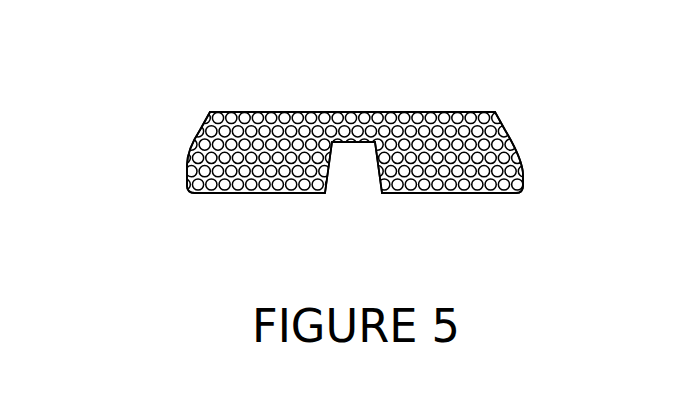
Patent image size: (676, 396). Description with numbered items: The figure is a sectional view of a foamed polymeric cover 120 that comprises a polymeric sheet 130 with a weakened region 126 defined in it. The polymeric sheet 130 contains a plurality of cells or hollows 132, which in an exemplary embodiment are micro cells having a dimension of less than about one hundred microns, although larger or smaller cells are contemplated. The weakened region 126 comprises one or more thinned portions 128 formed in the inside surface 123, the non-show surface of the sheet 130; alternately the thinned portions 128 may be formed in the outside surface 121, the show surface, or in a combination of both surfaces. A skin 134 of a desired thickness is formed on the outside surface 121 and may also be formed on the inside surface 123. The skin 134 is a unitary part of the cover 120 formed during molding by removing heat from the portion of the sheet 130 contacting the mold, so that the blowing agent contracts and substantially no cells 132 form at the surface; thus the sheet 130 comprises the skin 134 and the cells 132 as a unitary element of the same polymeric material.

The foamed polymeric cover 120 is at (556, 147).
The outside surface 121 is at (467, 110).
The inside surface 123 is at (483, 195).
The weakened region 126 is at (346, 194).
The thinned portion 128 is at (359, 129).
The polymeric sheet 130 is at (528, 196).
The cells 132 is at (330, 113).
The skin 134 is at (230, 110).